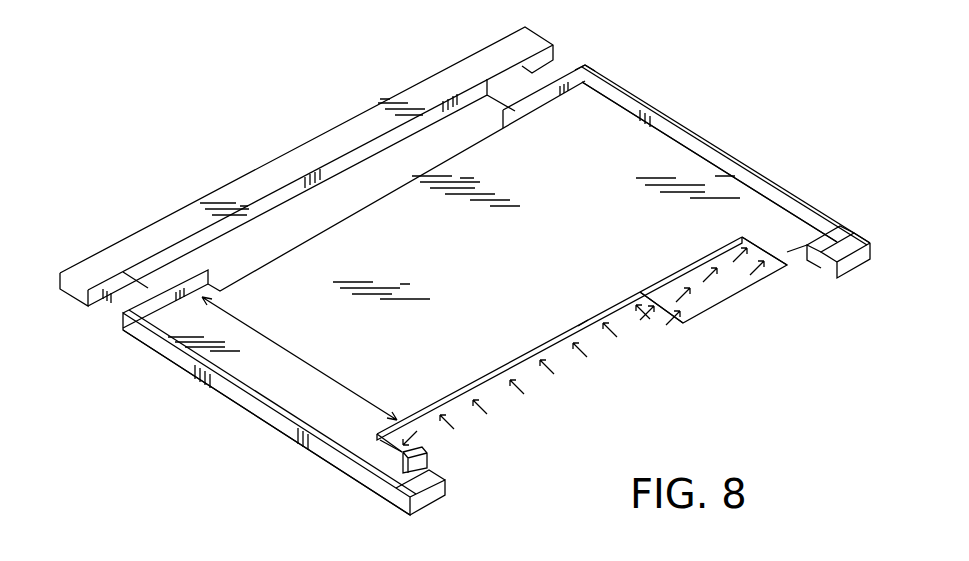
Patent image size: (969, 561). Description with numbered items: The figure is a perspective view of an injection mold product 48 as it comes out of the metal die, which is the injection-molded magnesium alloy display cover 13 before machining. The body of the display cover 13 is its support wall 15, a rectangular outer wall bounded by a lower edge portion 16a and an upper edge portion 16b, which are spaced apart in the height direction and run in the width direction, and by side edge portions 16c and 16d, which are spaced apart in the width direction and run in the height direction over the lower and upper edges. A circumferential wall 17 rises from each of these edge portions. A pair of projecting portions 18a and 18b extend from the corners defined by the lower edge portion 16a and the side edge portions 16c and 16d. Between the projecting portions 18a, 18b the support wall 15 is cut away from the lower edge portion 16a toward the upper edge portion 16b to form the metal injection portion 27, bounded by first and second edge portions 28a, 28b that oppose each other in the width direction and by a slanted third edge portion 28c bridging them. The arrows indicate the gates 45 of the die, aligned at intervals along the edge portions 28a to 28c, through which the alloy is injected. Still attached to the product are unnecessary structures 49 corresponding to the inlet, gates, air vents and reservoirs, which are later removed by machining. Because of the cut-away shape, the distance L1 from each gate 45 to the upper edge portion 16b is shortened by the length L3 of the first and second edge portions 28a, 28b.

The display cover 13 is at (652, 148).
The support wall 15 is at (388, 237).
The lower edge portion 16a is at (797, 258).
The upper edge portion 16b is at (542, 110).
The side edge portion 16c is at (238, 410).
The side edge portion 16d is at (740, 170).
The circumferential wall 17 is at (817, 223).
The projecting portion 18a is at (397, 495).
The projecting portion 18b is at (857, 265).
The metal injection portion 27 is at (513, 360).
The first edge portion 28a is at (392, 451).
The second edge portion 28b is at (767, 245).
The third edge portion 28c is at (583, 328).
The gates 45 is at (680, 295).
The injection mold product 48 is at (640, 100).
The unnecessary structures 49 is at (277, 160).
The distance L1 is at (290, 350).
The length L3 is at (673, 330).